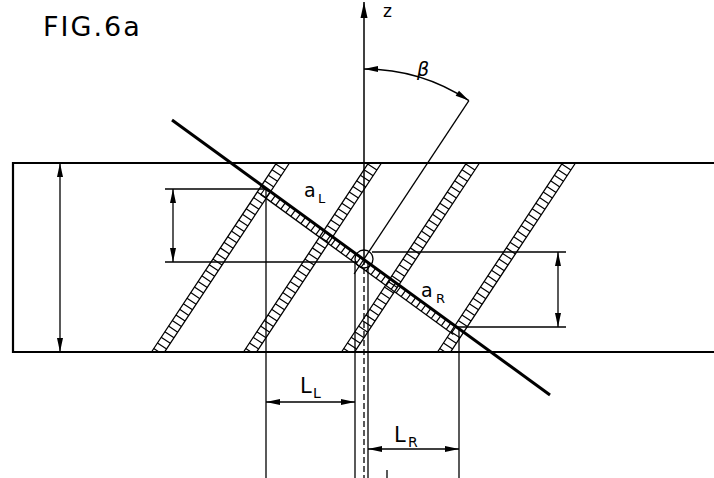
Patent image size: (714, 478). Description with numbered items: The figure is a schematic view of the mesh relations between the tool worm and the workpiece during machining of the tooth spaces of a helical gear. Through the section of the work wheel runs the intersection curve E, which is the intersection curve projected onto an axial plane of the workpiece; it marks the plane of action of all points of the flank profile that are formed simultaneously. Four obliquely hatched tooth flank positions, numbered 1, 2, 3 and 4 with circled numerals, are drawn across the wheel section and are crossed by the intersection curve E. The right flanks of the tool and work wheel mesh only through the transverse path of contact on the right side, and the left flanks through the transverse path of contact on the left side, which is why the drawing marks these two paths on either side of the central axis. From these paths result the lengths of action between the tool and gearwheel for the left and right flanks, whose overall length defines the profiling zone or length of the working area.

The first sound path position 1 is at (227, 240).
The second sound path position 2 is at (323, 240).
The third sound path position 3 is at (418, 241).
The fourth sound path position 4 is at (514, 241).
The intersection curve E is at (188, 125).